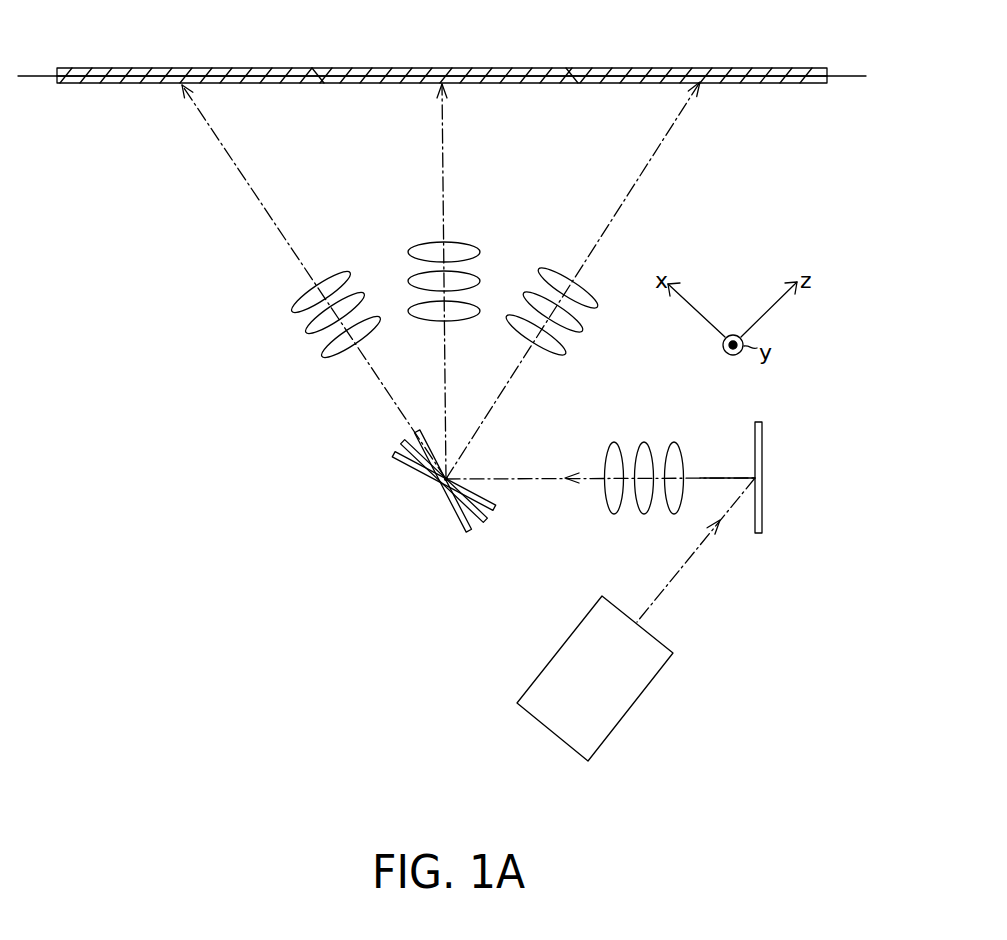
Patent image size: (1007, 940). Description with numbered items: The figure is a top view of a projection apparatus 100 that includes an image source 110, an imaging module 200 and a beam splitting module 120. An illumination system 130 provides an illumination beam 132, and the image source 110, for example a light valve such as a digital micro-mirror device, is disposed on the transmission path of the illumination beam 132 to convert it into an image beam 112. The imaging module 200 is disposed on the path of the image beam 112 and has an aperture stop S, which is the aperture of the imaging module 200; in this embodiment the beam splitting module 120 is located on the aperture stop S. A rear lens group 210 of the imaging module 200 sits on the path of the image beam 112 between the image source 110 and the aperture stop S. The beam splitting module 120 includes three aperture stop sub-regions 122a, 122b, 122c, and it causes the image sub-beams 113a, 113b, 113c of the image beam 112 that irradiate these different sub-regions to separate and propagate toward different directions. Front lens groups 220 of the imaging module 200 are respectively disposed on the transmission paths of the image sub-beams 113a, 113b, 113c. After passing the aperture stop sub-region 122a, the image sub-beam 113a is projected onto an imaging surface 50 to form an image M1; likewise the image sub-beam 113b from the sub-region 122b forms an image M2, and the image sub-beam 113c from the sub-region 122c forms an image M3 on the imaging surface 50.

The imaging surface 50 is at (843, 66).
The image M1 is at (653, 66).
The image M2 is at (363, 66).
The image M3 is at (113, 66).
The projection apparatus 100 is at (778, 781).
The image source 110 is at (763, 437).
The image beam 112 is at (719, 475).
The image sub-beam 113a is at (636, 188).
The image sub-beam 113b is at (446, 186).
The image sub-beam 113c is at (258, 186).
The beam splitting module 120 is at (351, 462).
The aperture stop sub-region 122a is at (417, 434).
The aperture stop sub-region 122b is at (403, 444).
The aperture stop sub-region 122c is at (412, 468).
The illumination system 130 is at (633, 705).
The illumination beam 132 is at (683, 572).
The imaging module 200 is at (393, 307).
The rear lens group 210 is at (684, 442).
The front lens groups 220 is at (409, 322).
The aperture stop S is at (433, 497).